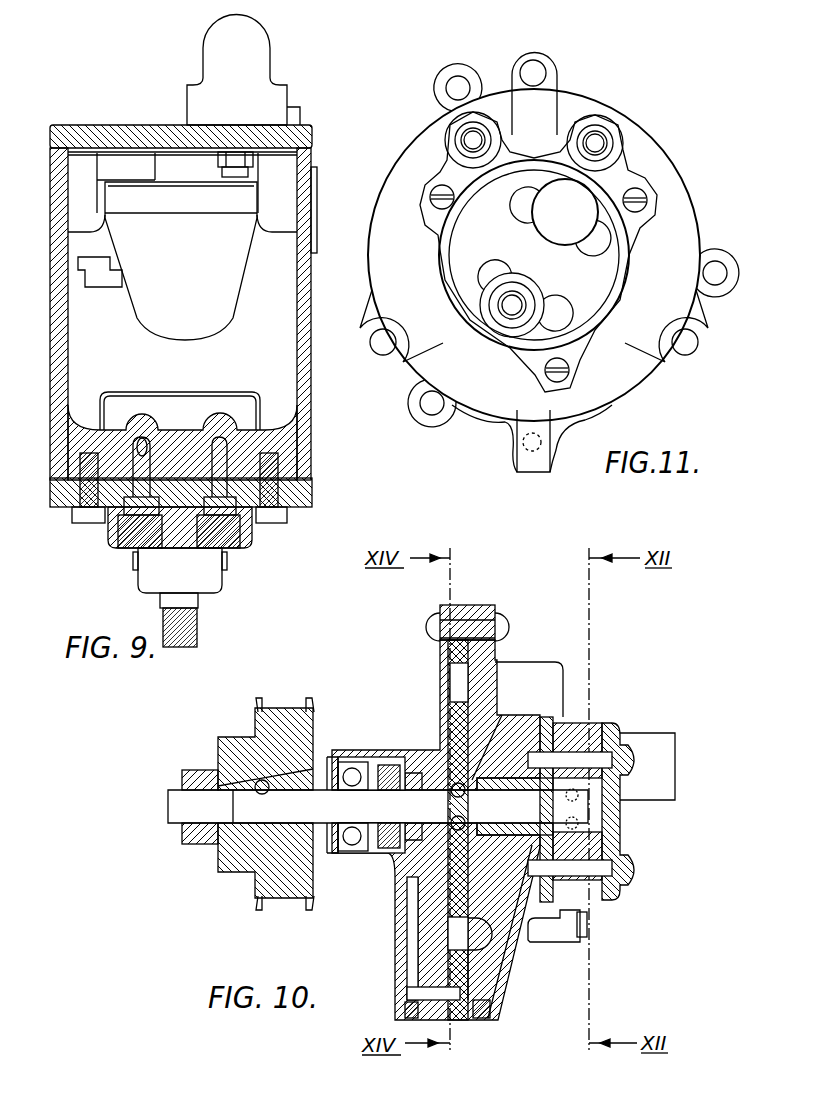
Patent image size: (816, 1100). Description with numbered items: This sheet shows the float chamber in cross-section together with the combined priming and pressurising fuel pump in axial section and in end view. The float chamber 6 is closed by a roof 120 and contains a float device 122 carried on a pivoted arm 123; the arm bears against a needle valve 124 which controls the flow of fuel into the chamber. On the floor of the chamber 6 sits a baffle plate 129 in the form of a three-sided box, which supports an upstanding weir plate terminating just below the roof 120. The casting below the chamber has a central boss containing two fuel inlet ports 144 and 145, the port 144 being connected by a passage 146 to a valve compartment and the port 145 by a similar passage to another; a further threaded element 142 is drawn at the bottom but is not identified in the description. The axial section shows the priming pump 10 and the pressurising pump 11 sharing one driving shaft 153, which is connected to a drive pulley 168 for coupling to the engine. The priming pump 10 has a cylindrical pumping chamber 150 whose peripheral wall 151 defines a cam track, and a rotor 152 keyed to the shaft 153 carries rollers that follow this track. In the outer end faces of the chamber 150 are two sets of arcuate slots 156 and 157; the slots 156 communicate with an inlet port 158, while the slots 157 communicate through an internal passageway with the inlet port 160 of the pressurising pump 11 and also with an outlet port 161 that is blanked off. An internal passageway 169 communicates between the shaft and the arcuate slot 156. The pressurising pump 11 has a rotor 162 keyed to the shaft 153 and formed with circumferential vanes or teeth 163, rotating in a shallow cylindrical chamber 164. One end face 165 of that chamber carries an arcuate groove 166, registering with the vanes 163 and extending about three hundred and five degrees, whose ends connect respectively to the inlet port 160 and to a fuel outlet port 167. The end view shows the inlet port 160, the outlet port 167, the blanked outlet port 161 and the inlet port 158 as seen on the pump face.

In FIG. 9, the float chamber 6 is at (302, 310).
In FIG. 9, the roof 120 is at (92, 125).
In FIG. 9, the float device 122 is at (195, 284).
In FIG. 9, the pivoted arm 123 is at (205, 182).
In FIG. 9, the needle valve 124 is at (223, 177).
In FIG. 9, the baffle plate 129 is at (168, 392).
In FIG. 9, the passage 146 is at (150, 440).
In FIG. 9, the fuel inlet port 144 is at (122, 538).
In FIG. 9, the fuel inlet port 145 is at (240, 538).
In FIG. 9, the fitting stud 142 is at (187, 632).
In FIG. 11, the inlet port 160 is at (458, 135).
In FIG. 11, the fuel outlet port 167 is at (612, 138).
In FIG. 10, the fuel outlet port 167 is at (552, 672).
In FIG. 11, the outlet port 161 is at (540, 223).
In FIG. 11, the inlet port 158 is at (522, 297).
In FIG. 10, the priming pump 10 is at (574, 702).
In FIG. 10, the pressurising pump 11 is at (430, 660).
In FIG. 10, the cylindrical pumping chamber 150 is at (612, 815).
In FIG. 10, the peripheral wall 151 is at (585, 735).
In FIG. 10, the rotor 152 is at (584, 848).
In FIG. 10, the driving shaft 153 is at (422, 818).
In FIG. 10, the arcuate slots 156 is at (616, 874).
In FIG. 10, the arcuate slots 157 is at (534, 757).
In FIG. 10, the rotor 162 is at (457, 752).
In FIG. 10, the circumferential vanes or teeth 163 is at (450, 680).
In FIG. 10, the shallow cylindrical chamber 164 is at (442, 880).
In FIG. 10, the end face 165 is at (490, 700).
In FIG. 10, the arcuate groove 166 is at (478, 940).
In FIG. 10, the drive pulley 168 is at (255, 866).
In FIG. 10, the internal passageway 169 is at (422, 992).